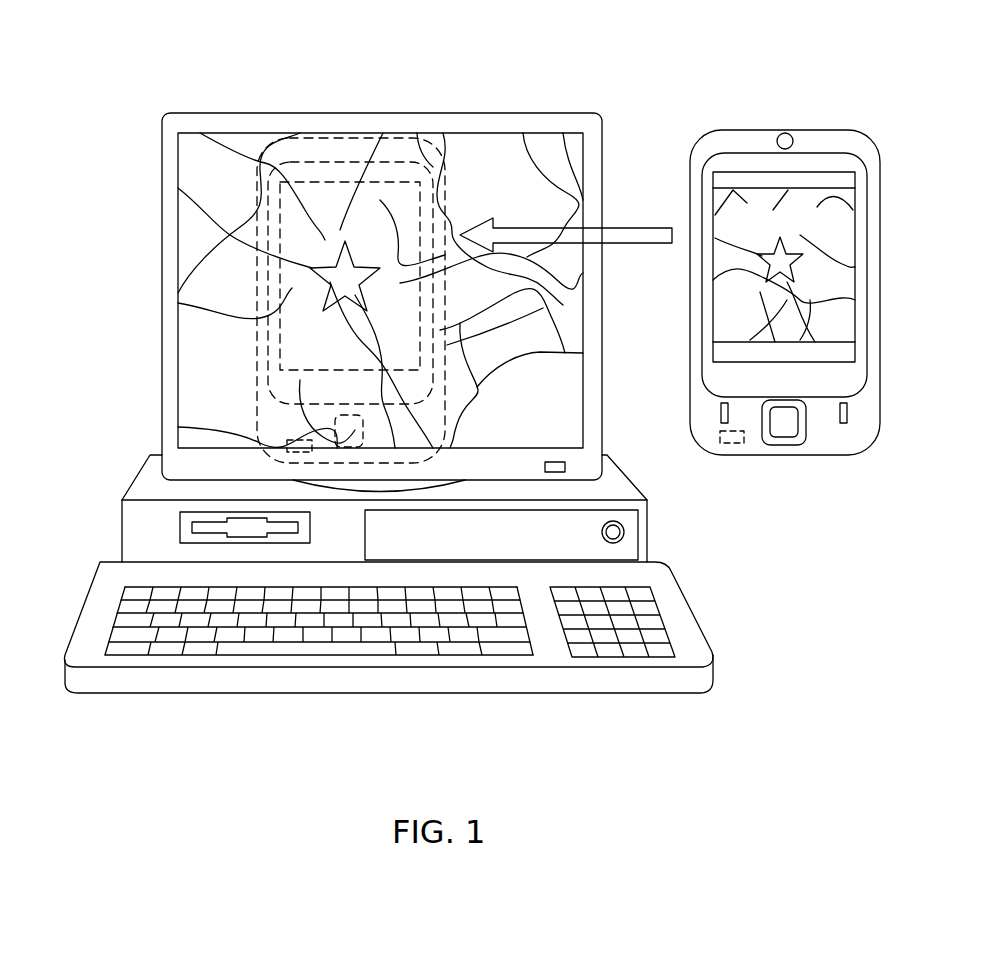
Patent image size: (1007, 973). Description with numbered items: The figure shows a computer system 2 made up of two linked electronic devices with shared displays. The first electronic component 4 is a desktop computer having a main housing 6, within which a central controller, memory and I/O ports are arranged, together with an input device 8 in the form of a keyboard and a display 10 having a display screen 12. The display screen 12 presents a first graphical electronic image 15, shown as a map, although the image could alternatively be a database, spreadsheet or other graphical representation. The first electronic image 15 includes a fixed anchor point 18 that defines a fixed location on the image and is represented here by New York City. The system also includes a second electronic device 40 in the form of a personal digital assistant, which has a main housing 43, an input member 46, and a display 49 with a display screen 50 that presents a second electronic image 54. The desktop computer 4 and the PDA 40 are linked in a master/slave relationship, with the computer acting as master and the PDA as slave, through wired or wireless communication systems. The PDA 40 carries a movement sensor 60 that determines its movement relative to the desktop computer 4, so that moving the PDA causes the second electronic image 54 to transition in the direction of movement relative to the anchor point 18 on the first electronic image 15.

The computer system 2 is at (152, 90).
The first electronic component 4 is at (122, 470).
The main housing 6 is at (122, 542).
The input device 8 is at (74, 626).
The display 10 is at (150, 333).
The display screen 12 is at (193, 163).
The first graphical electronic image 15 is at (575, 395).
The fixed anchor point 18 is at (315, 298).
The second electronic device 40 is at (861, 458).
The main housing 43 is at (458, 396).
The input member 46 is at (364, 432).
The display 49 is at (432, 214).
The display screen 50 is at (422, 297).
The second electronic image 54 is at (725, 306).
The movement sensor 60 is at (287, 448).